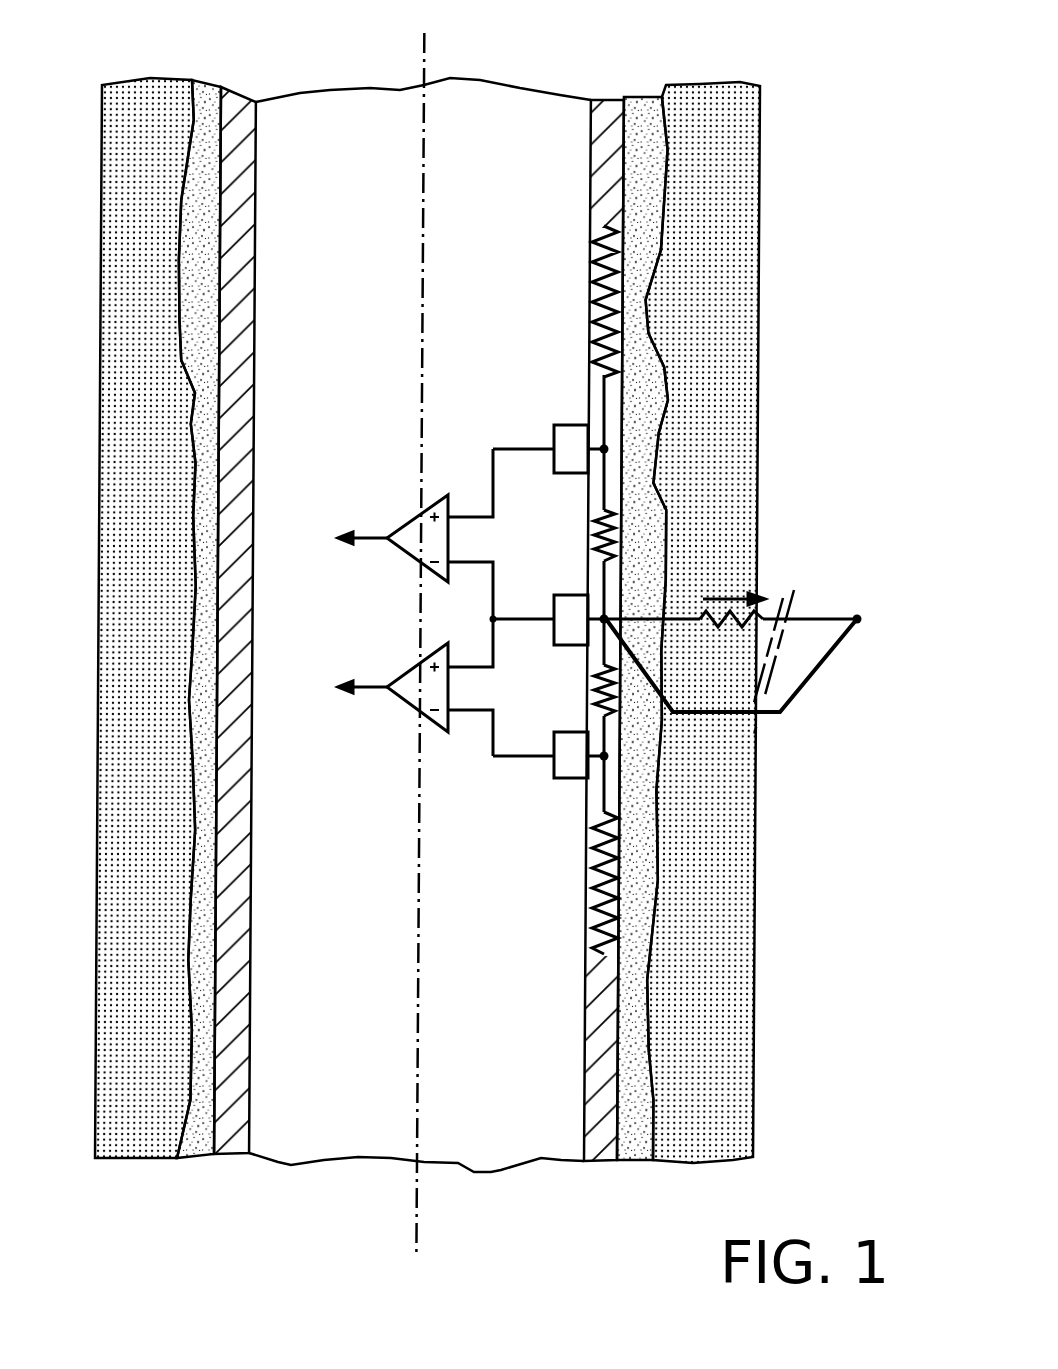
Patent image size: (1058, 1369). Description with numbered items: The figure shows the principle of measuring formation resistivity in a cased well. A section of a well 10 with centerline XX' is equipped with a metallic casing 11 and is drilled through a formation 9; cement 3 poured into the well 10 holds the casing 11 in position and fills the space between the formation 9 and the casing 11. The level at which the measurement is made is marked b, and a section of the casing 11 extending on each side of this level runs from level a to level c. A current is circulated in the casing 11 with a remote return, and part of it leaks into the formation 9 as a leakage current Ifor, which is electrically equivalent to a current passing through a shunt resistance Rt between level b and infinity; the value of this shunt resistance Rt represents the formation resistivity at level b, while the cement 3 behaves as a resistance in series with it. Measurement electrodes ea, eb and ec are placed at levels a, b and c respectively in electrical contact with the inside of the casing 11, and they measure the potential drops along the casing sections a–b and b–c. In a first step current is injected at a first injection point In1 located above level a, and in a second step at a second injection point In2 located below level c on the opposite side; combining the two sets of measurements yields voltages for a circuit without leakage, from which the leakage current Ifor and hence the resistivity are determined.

The metallic casing 11 is at (743, 117).
The well 10 is at (353, 143).
The cement 3 is at (646, 120).
The formation 9 is at (237, 117).
The level a is at (606, 449).
The level b is at (606, 619).
The level c is at (606, 756).
The measurement electrode ea is at (567, 437).
The measurement electrode eb is at (567, 603).
The measurement electrode ec is at (564, 742).
The first injection point In1 is at (580, 307).
The second injection point In2 is at (580, 888).
The leakage current Ifor is at (734, 586).
The shunt resistance Rt is at (712, 627).